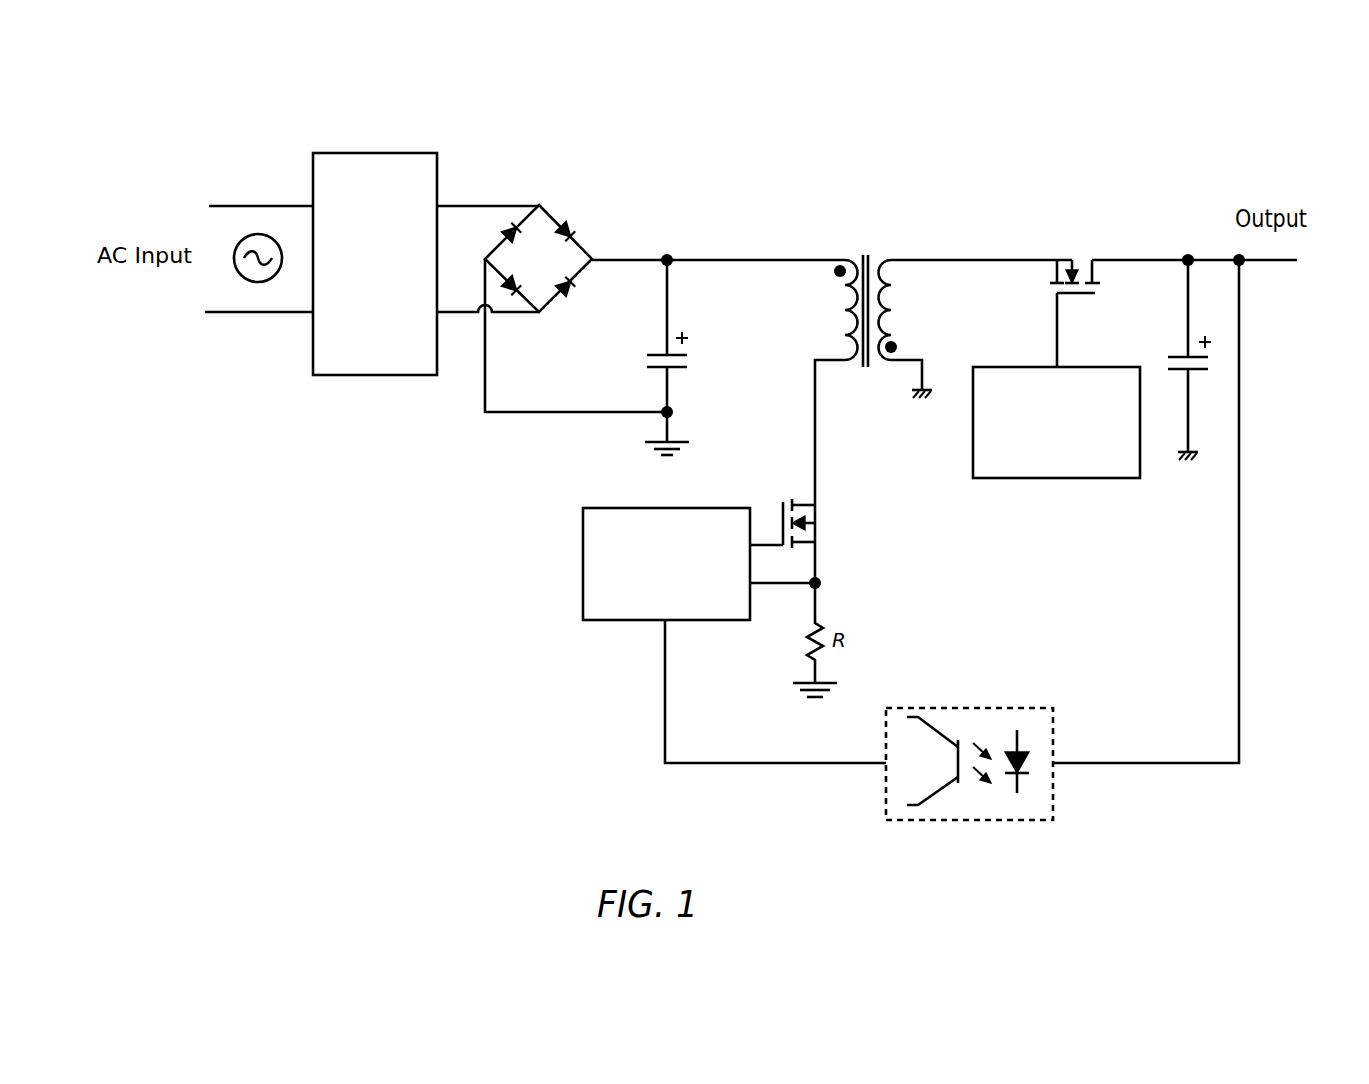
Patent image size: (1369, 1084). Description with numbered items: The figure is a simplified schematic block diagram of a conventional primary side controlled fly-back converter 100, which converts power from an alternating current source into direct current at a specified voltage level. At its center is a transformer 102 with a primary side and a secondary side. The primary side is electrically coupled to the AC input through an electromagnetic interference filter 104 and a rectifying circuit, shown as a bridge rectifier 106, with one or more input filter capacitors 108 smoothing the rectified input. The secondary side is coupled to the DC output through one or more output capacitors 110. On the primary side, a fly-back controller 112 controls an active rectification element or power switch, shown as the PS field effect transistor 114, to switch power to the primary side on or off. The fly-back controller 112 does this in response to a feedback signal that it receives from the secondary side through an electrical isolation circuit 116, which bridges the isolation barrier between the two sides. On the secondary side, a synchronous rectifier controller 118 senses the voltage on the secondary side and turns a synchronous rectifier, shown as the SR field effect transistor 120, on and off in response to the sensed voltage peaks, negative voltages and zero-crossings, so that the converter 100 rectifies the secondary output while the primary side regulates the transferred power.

The PSC fly-back converter 100 is at (170, 98).
The transformer 102 is at (861, 238).
The EMI filter 104 is at (378, 375).
The bridge rectifier 106 is at (539, 192).
The input filter capacitor 108 is at (661, 352).
The output capacitor 110 is at (1182, 354).
The fly-back controller 112 is at (667, 507).
The PS field effect transistor 114 is at (828, 513).
The electrical isolation circuit 116 is at (968, 706).
The synchronous rectifier controller 118 is at (1057, 478).
The SR field effect transistor 120 is at (1066, 240).